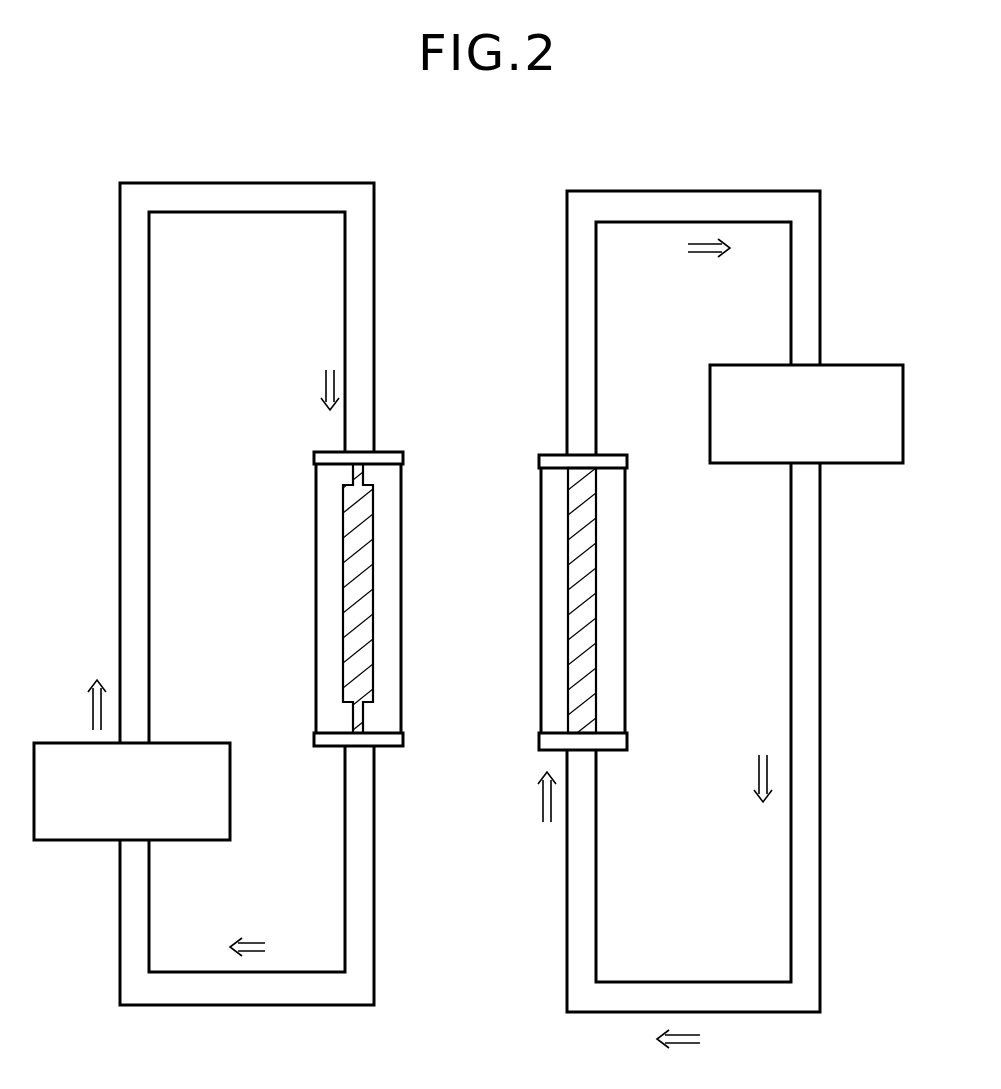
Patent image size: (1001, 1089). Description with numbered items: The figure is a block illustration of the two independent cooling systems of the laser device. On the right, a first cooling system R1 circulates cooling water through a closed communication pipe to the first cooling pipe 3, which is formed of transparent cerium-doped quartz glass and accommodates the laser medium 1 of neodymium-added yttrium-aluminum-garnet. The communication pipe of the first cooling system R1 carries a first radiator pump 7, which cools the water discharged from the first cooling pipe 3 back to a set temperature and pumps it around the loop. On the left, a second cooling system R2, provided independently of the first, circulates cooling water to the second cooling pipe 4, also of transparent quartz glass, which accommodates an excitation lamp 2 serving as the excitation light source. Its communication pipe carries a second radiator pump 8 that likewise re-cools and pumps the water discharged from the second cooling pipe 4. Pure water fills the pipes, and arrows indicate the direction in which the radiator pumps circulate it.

The laser medium 1 is at (583, 627).
The excitation lamp 2 is at (353, 597).
The first cooling pipe 3 is at (627, 563).
The second cooling pipe 4 is at (314, 525).
The first radiator pump 7 is at (862, 365).
The second radiator pump 8 is at (77, 825).
The first cooling system R1 is at (708, 191).
The second cooling system R2 is at (262, 183).